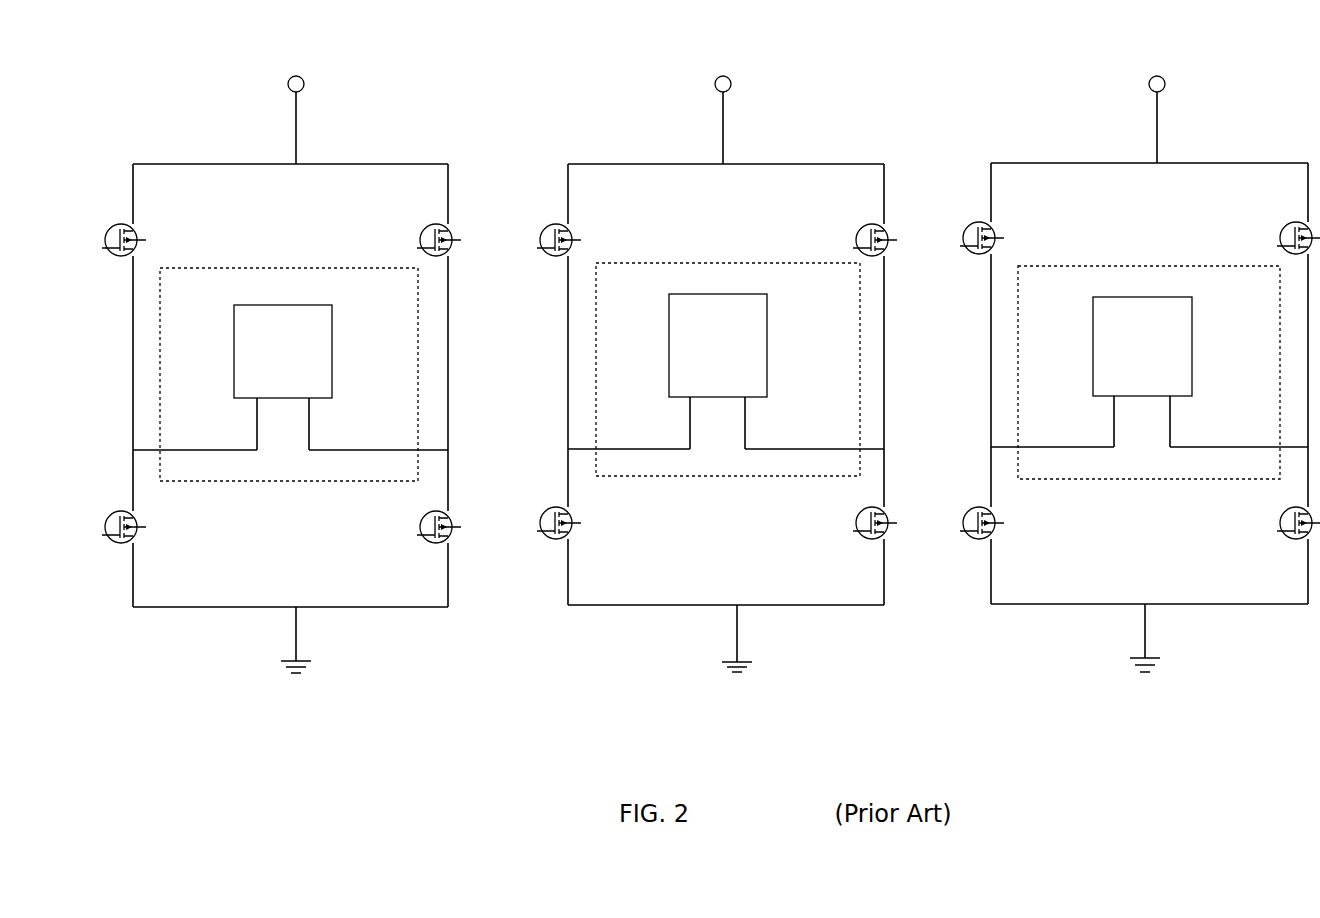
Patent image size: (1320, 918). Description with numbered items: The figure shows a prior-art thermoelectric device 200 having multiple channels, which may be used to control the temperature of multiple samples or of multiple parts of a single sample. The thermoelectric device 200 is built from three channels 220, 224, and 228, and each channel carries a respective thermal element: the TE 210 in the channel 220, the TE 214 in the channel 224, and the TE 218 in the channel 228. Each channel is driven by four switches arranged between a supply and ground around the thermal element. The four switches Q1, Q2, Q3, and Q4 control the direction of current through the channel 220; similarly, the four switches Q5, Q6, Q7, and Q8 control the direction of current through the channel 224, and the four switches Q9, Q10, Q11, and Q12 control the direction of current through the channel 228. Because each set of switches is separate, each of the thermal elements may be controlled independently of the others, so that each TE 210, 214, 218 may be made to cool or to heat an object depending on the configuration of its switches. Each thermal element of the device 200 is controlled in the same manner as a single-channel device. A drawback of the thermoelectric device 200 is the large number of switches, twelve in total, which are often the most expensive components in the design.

The thermoelectric device 200 is at (250, 723).
The TE 210 is at (283, 351).
The TE 214 is at (718, 345).
The TE 218 is at (1142, 346).
The channel 220 is at (160, 377).
The channel 224 is at (596, 371).
The channel 228 is at (1018, 374).
The switch Q1 is at (150, 236).
The switch Q2 is at (152, 526).
The switch Q3 is at (409, 236).
The switch Q4 is at (411, 526).
The switch Q5 is at (587, 240).
The switch Q6 is at (587, 523).
The switch Q7 is at (845, 235).
The switch Q8 is at (847, 523).
The switch Q9 is at (1011, 238).
The switch Q10 is at (1014, 523).
The switch Q11 is at (1266, 234).
The switch Q12 is at (1267, 523).